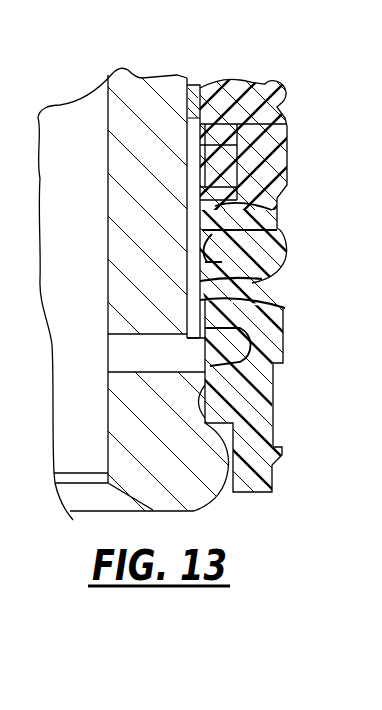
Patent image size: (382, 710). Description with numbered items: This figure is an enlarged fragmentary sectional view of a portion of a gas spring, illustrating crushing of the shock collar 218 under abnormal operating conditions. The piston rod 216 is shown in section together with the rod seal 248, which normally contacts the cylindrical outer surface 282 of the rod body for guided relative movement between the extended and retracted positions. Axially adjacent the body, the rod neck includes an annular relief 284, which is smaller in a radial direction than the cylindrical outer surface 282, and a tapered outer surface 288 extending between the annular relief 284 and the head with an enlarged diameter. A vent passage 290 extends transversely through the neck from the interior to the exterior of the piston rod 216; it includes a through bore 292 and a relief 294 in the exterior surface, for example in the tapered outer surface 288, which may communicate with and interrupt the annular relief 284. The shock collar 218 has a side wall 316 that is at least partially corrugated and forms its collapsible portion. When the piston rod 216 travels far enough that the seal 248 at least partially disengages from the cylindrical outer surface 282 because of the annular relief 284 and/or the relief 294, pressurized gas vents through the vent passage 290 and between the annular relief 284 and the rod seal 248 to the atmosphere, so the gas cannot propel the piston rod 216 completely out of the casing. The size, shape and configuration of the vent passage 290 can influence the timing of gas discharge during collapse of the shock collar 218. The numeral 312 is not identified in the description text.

The piston rod 216 is at (174, 52).
The shock collar 218 is at (296, 496).
The rod seal 248 is at (262, 128).
The cylindrical outer surface 282 is at (195, 92).
The annular relief 284 is at (270, 170).
The tapered outer surface 288 is at (264, 212).
The vent passage 290 is at (80, 352).
The through bore 292 is at (138, 350).
The relief 294 is at (280, 305).
The liner 312 is at (183, 291).
The side wall 316 is at (290, 290).